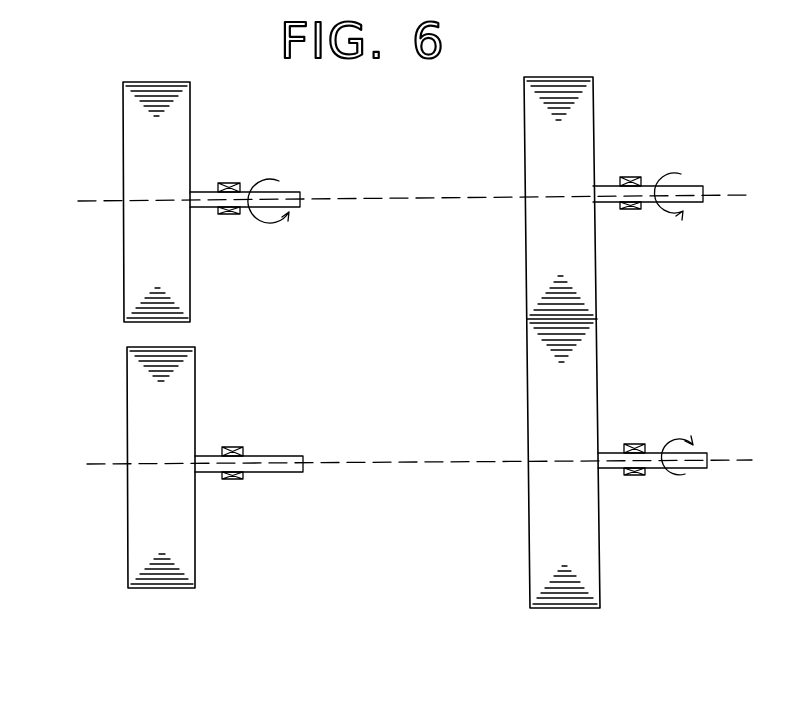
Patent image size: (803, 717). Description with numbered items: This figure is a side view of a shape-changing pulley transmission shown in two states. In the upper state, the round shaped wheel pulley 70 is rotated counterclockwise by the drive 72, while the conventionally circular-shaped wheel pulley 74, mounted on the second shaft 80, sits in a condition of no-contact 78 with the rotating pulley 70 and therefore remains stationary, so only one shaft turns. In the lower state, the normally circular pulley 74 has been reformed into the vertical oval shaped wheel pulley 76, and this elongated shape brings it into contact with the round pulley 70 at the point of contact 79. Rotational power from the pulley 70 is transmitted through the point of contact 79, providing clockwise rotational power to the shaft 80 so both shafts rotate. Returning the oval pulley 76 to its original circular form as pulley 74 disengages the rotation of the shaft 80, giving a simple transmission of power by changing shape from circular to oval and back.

The round shaped wheel pulley 70 is at (123, 110).
The drive 72 is at (198, 190).
The conventionally circular-shaped wheel pulley 74 is at (214, 383).
The vertical oval shaped wheel pulley 76 is at (523, 393).
The no-contact 78 is at (190, 333).
The point of contact 79 is at (527, 319).
The shaft 80 is at (250, 456).